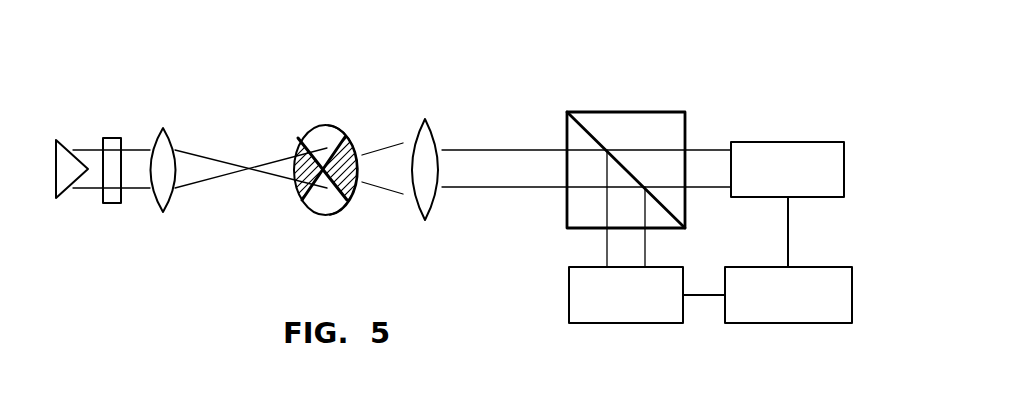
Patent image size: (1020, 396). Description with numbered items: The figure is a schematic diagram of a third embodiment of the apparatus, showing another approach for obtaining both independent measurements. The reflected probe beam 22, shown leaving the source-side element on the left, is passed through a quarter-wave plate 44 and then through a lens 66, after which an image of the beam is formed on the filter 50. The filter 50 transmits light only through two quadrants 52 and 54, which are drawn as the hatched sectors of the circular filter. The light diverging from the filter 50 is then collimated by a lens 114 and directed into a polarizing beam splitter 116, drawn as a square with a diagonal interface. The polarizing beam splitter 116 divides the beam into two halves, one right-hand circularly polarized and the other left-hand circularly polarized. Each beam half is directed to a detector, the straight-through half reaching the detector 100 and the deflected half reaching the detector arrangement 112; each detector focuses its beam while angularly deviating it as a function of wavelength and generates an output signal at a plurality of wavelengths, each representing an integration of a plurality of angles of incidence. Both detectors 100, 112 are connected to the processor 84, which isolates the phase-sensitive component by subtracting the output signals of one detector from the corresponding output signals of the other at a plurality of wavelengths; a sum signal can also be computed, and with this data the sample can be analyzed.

The reflected probe beam 22 is at (92, 190).
The quarter-wave plate 44 is at (112, 138).
The lens 66 is at (165, 138).
The filter 50 is at (332, 169).
The quadrant 52 is at (325, 133).
The quadrant 54 is at (327, 203).
The lens 114 is at (427, 122).
The polarizing beam splitter 116 is at (630, 111).
The detector 100 is at (782, 142).
The detector arrangement 112 is at (625, 323).
The processor 84 is at (815, 267).